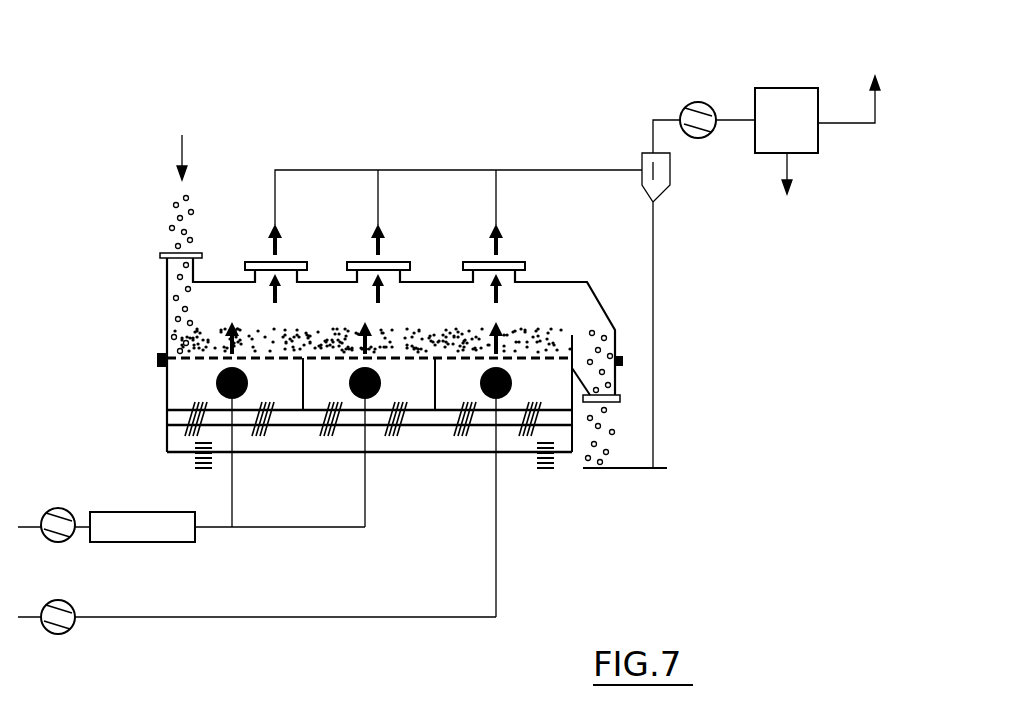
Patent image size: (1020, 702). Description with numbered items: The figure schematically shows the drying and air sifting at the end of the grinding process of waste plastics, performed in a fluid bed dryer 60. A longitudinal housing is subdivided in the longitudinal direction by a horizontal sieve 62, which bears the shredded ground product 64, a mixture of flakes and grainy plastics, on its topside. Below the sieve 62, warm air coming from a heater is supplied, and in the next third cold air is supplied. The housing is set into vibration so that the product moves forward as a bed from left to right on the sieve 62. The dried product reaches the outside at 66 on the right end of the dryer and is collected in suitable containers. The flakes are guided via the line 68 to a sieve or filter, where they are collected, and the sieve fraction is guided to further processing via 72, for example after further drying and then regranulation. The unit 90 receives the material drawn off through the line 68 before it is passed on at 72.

The fluid bed dryer 60 is at (231, 245).
The sieve 62 is at (165, 327).
The shredded ground product 64 is at (187, 200).
The dried product outlet 66 is at (617, 470).
The line 68 is at (443, 168).
The sieve fraction outlet 72 is at (788, 170).
The separator unit 90 is at (775, 108).